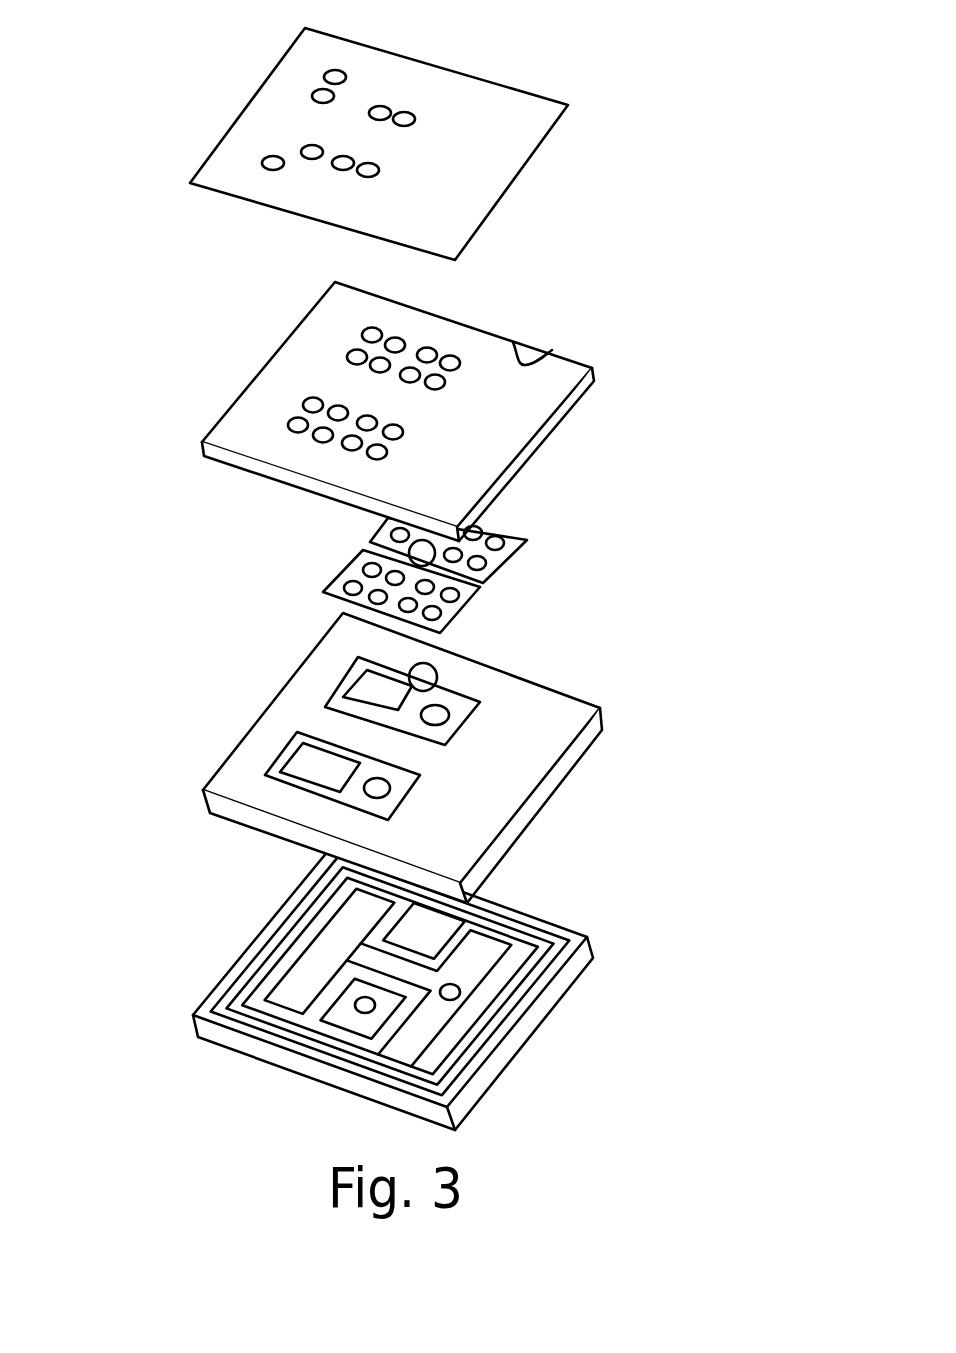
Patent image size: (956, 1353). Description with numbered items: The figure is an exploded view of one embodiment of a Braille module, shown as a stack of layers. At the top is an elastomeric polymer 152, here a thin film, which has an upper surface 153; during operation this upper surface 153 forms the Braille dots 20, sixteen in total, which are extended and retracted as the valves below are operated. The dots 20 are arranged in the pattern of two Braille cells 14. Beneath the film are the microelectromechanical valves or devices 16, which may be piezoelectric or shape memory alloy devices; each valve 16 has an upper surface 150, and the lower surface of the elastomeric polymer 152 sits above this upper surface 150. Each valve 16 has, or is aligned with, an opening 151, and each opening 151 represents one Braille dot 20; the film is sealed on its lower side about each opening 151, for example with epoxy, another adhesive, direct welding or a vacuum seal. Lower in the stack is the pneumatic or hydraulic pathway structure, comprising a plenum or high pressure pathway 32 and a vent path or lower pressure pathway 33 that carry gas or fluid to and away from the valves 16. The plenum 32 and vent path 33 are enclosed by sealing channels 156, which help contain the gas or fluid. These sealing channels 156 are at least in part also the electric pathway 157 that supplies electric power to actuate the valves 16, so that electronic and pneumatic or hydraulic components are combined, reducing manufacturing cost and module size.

The Braille cell 14 is at (376, 411).
The microelectromechanical valve or device 16 is at (503, 543).
The Braille dot 20 is at (413, 115).
The plenum or high pressure pathway 32 is at (367, 680).
The vent path or lower pressure pathway 33 is at (433, 715).
The upper surface of microelectromechanical valve 150 is at (487, 572).
The opening 151 is at (453, 362).
The elastomeric polymer 152 is at (460, 142).
The upper surface of elastomeric polymer 153 is at (472, 207).
The sealing channels 156 is at (319, 758).
The electric pathway 157 is at (485, 738).